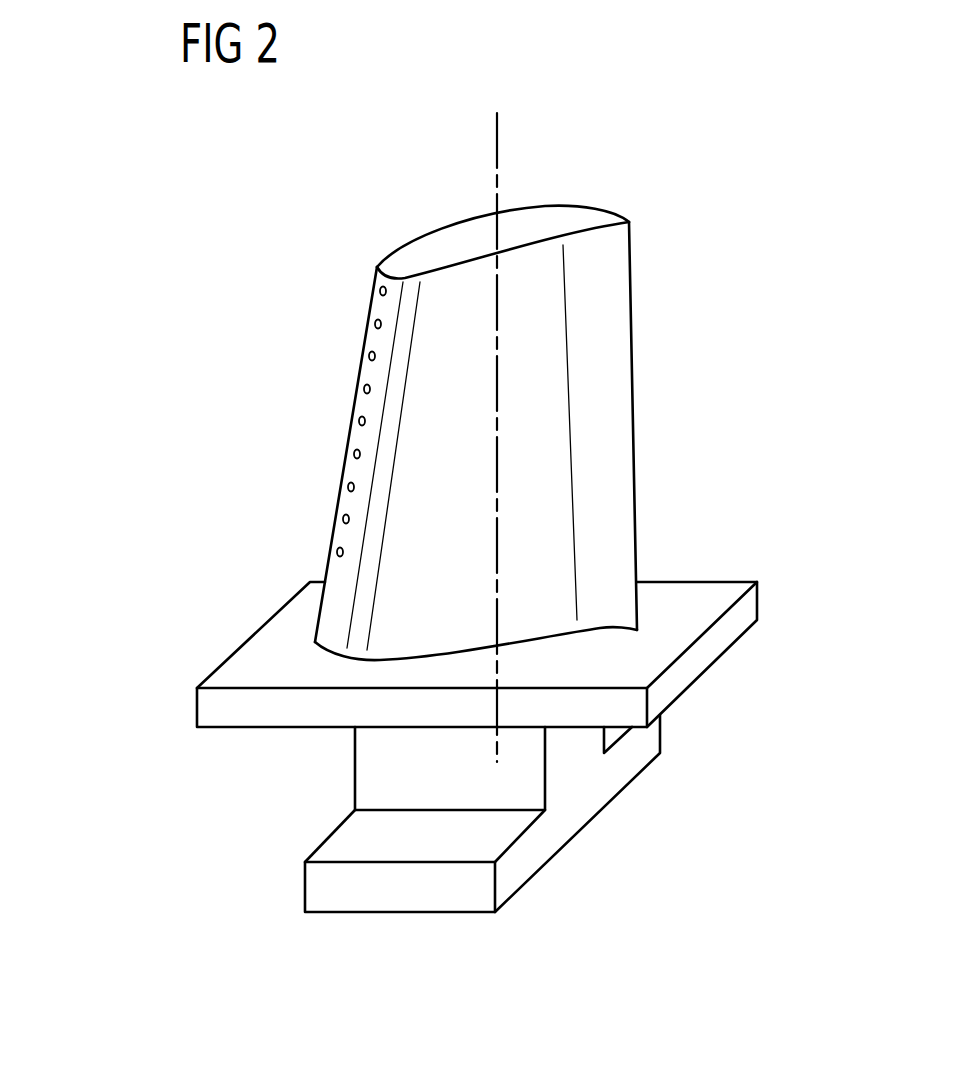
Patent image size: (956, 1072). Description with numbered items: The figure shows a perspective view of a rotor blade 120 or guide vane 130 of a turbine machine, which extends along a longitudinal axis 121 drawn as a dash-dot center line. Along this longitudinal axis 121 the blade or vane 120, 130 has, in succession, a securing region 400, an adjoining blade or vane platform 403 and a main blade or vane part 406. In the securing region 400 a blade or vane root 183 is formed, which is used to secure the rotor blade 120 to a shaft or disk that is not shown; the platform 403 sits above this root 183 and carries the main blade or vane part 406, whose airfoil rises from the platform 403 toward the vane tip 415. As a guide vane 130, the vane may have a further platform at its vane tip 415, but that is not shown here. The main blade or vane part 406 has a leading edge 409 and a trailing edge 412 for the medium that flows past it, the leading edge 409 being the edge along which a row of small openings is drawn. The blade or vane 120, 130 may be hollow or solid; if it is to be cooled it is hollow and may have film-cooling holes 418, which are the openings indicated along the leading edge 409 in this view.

The rotor blade 120 is at (253, 447).
The guide vane 130 is at (500, 389).
The longitudinal axis 121 is at (497, 152).
The vane tip 415 is at (406, 257).
The leading edge 409 is at (365, 363).
The trailing edge 412 is at (636, 392).
The main blade or vane part 406 is at (335, 622).
The film-cooling holes 418 is at (370, 356).
The securing region 400 is at (598, 781).
The blade or vane platform 403 is at (722, 628).
The blade or vane root 183 is at (343, 845).